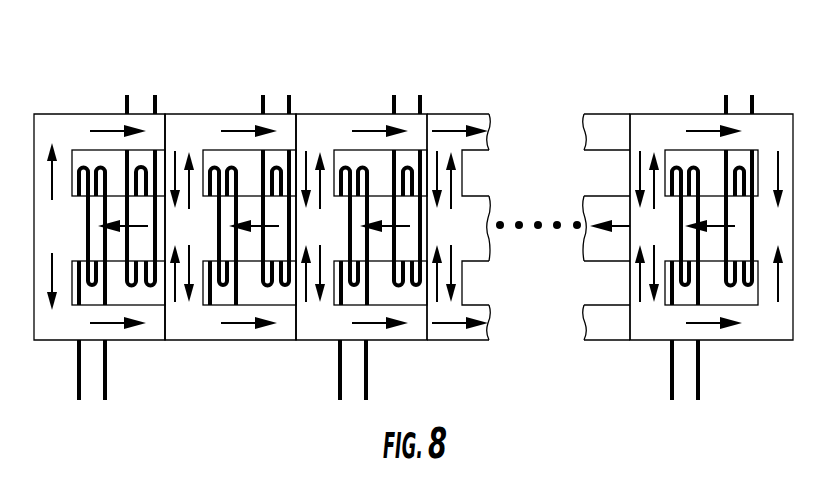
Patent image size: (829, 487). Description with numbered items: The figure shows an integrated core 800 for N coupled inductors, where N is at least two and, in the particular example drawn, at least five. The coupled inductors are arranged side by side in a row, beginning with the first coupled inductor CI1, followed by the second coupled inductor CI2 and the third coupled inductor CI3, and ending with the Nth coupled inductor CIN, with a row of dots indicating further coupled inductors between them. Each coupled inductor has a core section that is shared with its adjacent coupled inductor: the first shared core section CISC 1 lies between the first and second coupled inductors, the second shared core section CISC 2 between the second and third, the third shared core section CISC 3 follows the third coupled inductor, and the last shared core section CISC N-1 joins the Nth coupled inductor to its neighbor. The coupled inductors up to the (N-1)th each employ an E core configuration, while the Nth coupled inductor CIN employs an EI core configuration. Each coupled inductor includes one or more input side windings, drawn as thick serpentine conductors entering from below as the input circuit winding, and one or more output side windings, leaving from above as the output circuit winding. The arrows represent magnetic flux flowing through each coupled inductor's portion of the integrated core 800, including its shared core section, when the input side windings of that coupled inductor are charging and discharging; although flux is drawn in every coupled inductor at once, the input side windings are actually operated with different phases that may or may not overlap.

The integrated core 800 is at (413, 238).
The first coupled inductor CI1 is at (99, 244).
The second coupled inductor CI2 is at (230, 214).
The third coupled inductor CI3 is at (361, 244).
The Nth coupled inductor CIN is at (711, 244).
The first shared core section 1 is at (186, 327).
The second shared core section 2 is at (311, 327).
The third shared core section 3 is at (440, 333).
The (N-1)th shared core section N-1 is at (637, 267).